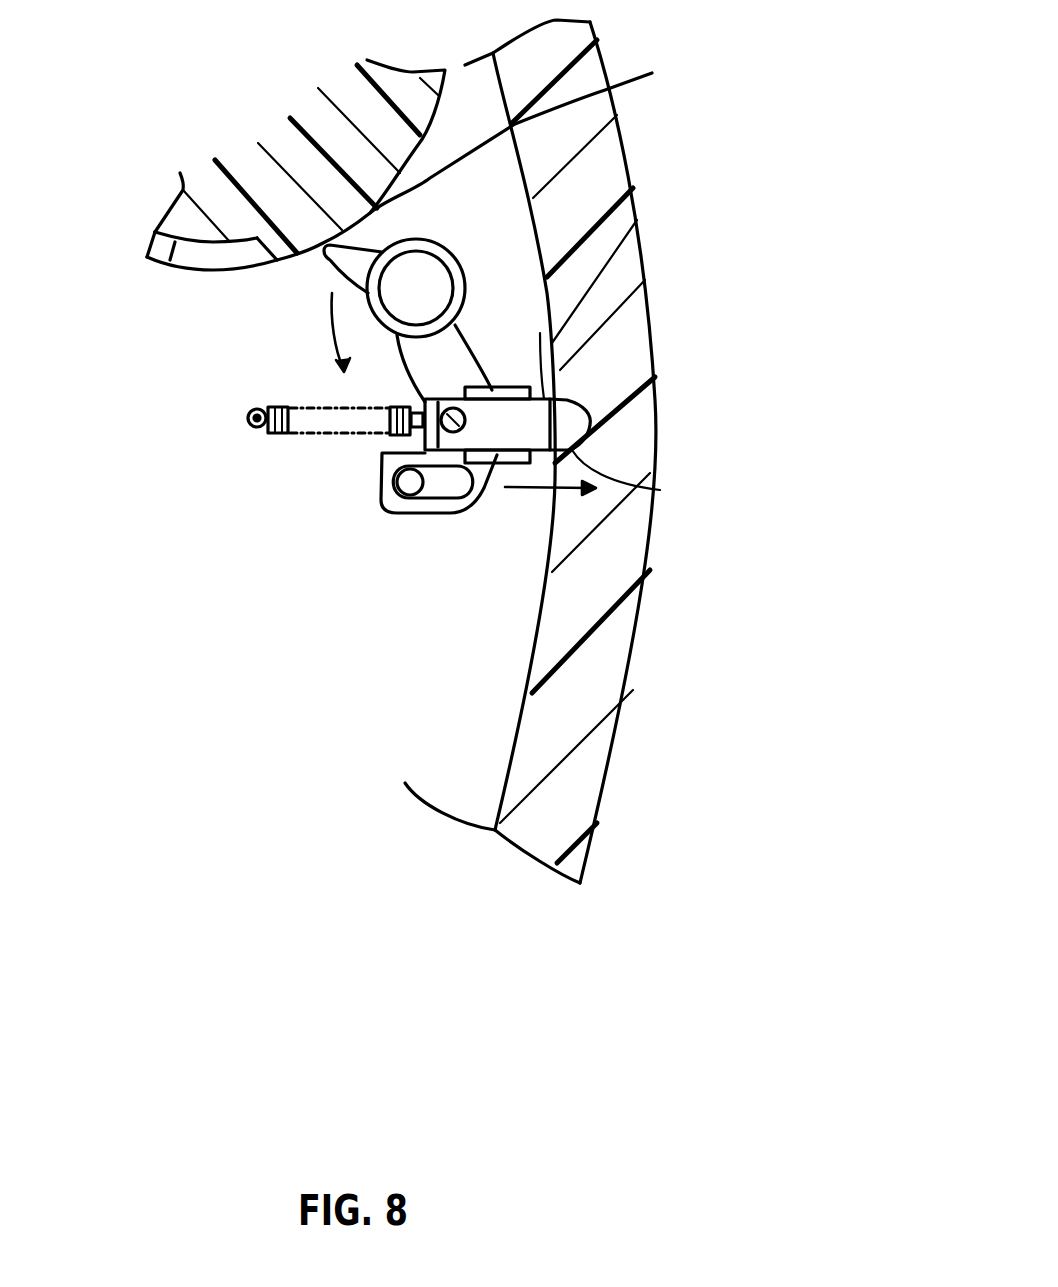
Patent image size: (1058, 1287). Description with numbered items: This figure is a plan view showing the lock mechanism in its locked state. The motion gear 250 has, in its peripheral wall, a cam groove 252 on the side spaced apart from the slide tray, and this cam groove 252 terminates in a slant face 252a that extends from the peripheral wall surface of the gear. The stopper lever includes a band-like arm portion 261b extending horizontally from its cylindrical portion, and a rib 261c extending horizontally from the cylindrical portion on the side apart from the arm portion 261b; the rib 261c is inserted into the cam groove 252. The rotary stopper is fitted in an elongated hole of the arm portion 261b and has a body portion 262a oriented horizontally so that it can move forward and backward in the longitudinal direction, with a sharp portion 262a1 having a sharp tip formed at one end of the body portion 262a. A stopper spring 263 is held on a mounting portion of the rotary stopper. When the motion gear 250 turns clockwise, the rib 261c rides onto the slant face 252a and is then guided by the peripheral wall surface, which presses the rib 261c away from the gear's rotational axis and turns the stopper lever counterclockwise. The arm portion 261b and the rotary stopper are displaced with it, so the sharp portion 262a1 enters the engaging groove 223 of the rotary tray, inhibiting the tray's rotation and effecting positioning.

The engaging groove 223 is at (660, 490).
The motion gear 250 is at (197, 270).
The cam groove 252 is at (163, 263).
The slant face 252a is at (247, 267).
The arm portion 261b is at (380, 503).
The rib 261c is at (437, 163).
The body portion 262a is at (637, 218).
The sharp portion 262a1 is at (557, 367).
The stopper spring 263 is at (277, 435).